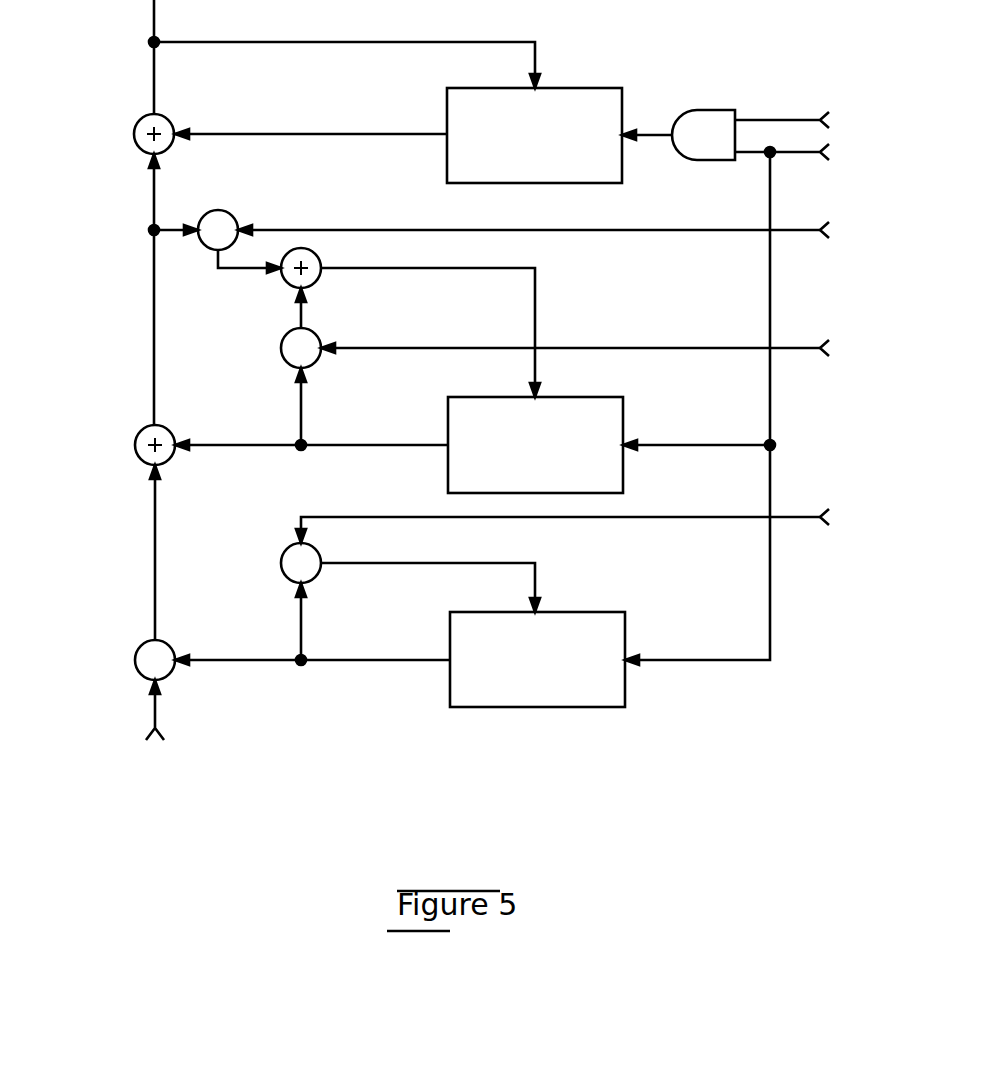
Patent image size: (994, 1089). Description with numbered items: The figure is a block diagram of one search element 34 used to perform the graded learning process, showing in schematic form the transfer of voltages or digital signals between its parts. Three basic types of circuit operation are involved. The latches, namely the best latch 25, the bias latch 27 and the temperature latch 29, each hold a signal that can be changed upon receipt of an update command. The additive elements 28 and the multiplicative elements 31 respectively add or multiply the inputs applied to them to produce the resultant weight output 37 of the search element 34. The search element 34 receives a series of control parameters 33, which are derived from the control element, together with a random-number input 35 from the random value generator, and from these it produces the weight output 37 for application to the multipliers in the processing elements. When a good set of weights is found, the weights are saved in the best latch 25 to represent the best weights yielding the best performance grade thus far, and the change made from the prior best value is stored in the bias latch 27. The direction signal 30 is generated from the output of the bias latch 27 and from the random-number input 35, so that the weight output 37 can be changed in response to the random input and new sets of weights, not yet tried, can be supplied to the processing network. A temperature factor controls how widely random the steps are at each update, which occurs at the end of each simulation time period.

The best latch 25 is at (583, 88).
The bias latch 27 is at (606, 397).
The additive element 28 is at (147, 116).
The temperature latch 29 is at (592, 612).
The direction signal 30 is at (153, 202).
The multiplicative element 31 is at (232, 215).
The control parameters 33 is at (932, 313).
The search element 34 is at (697, 40).
The random-number input 35 is at (158, 705).
The weight output 37 is at (153, 19).